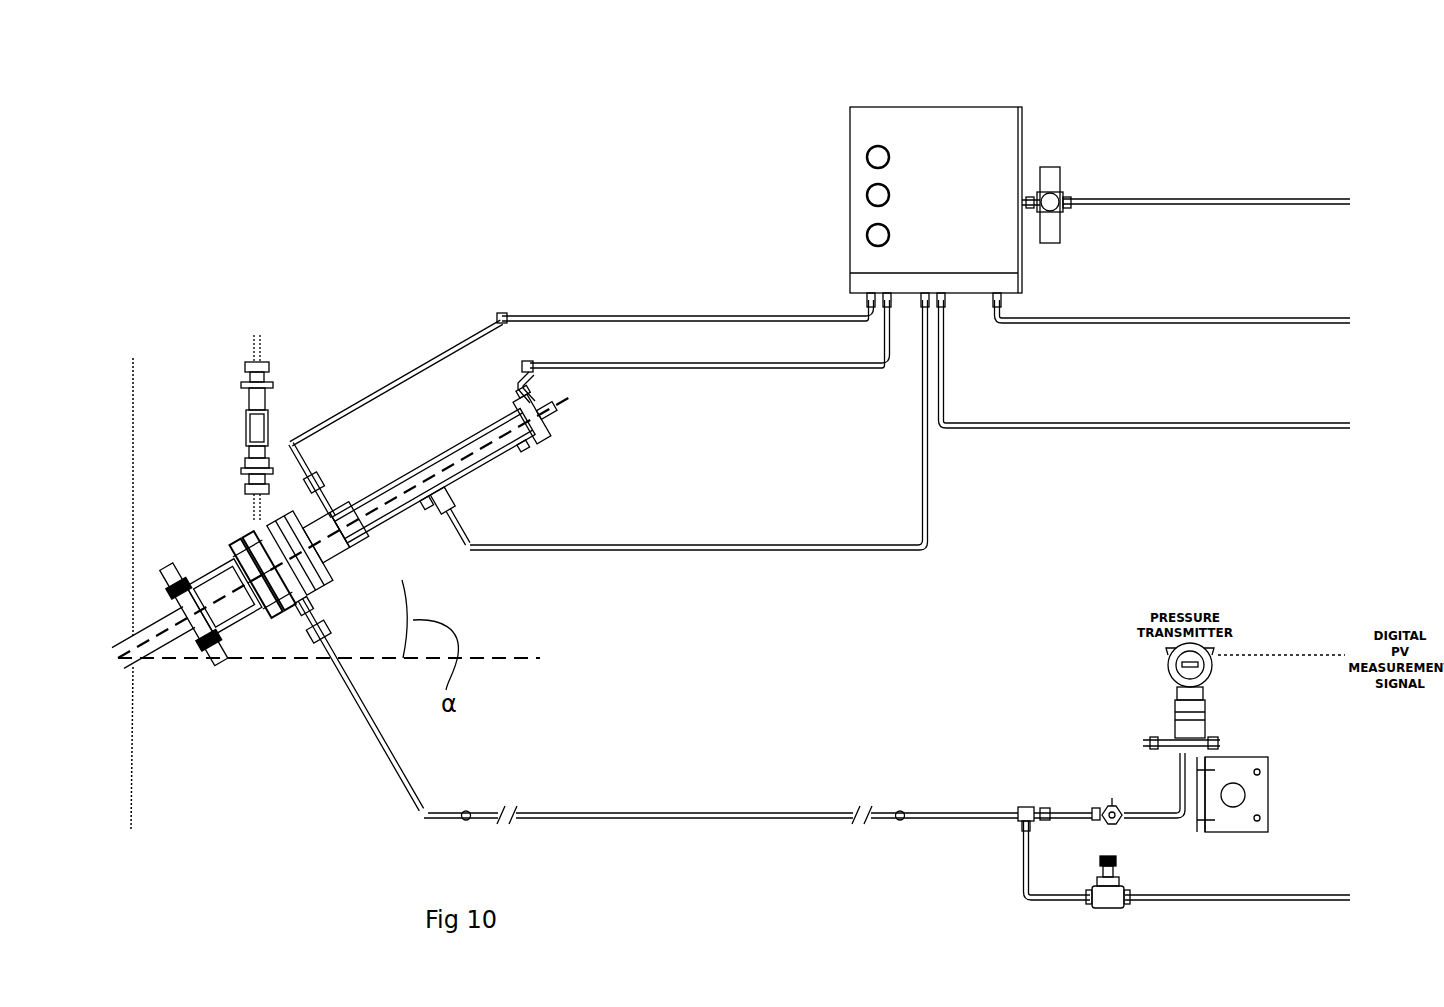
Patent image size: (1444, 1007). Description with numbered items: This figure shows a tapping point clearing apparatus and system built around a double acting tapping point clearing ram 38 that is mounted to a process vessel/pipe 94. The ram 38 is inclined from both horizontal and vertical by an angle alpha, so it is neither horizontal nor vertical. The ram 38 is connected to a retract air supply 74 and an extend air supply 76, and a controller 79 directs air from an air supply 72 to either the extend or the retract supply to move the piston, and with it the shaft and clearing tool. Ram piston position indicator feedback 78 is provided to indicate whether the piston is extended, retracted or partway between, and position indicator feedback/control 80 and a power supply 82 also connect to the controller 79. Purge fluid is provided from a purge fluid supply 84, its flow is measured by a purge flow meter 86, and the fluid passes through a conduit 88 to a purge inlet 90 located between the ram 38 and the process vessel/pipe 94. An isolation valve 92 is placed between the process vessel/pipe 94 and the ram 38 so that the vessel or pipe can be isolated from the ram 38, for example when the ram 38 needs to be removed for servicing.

The tapping point clearing ram 38 is at (421, 483).
The air supply 72 is at (1208, 196).
The retract air supply 74 is at (680, 316).
The extend air supply 76 is at (600, 370).
The ram piston position indicator feedback 78 is at (247, 427).
The controller 79 is at (892, 106).
The position indicator feedback/control 80 is at (1194, 314).
The power supply 82 is at (1166, 365).
The purge fluid supply 84 is at (1306, 906).
The purge flow meter 86 is at (1106, 909).
The conduit 88 is at (795, 818).
The purge inlet 90 is at (262, 575).
The isolation valve 92 is at (183, 620).
The process vessel/pipe 94 is at (120, 658).